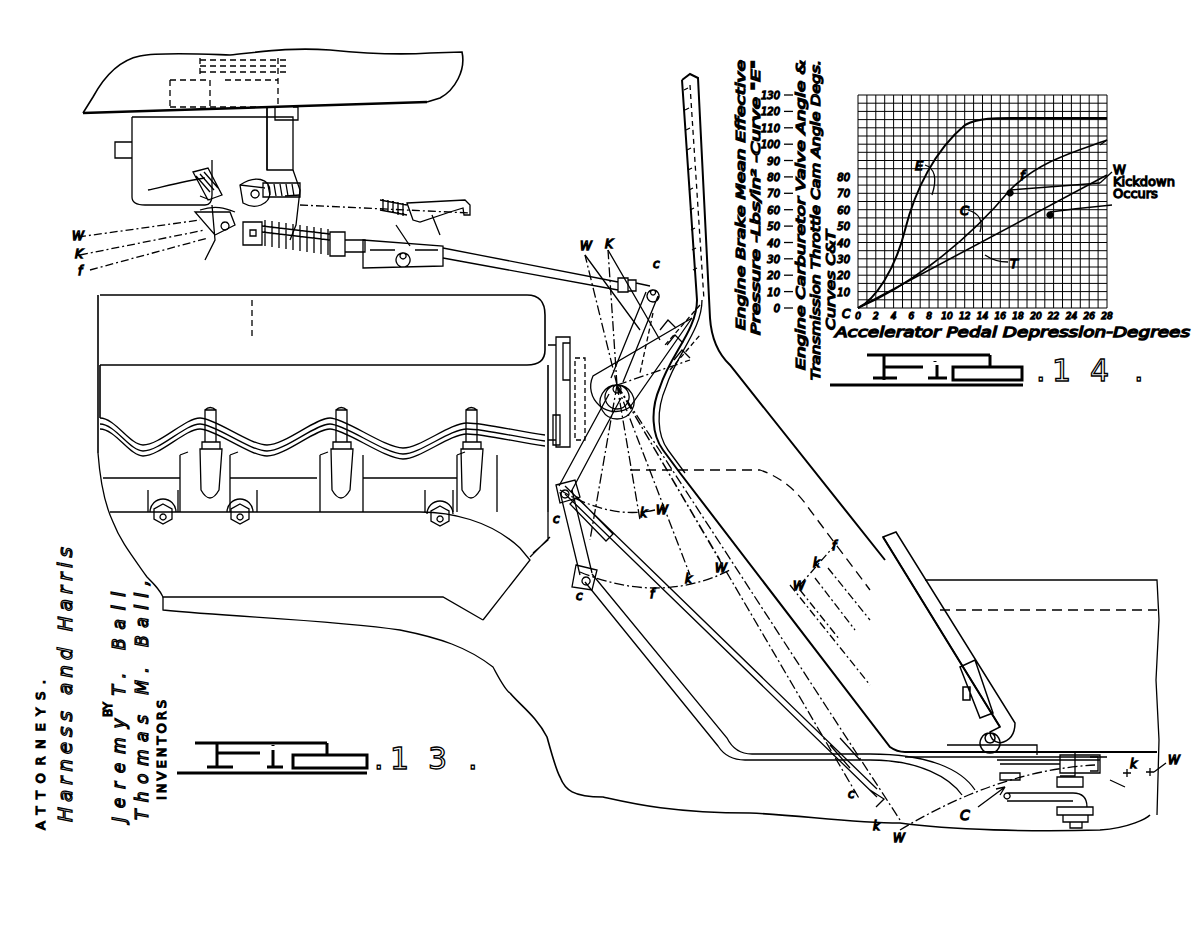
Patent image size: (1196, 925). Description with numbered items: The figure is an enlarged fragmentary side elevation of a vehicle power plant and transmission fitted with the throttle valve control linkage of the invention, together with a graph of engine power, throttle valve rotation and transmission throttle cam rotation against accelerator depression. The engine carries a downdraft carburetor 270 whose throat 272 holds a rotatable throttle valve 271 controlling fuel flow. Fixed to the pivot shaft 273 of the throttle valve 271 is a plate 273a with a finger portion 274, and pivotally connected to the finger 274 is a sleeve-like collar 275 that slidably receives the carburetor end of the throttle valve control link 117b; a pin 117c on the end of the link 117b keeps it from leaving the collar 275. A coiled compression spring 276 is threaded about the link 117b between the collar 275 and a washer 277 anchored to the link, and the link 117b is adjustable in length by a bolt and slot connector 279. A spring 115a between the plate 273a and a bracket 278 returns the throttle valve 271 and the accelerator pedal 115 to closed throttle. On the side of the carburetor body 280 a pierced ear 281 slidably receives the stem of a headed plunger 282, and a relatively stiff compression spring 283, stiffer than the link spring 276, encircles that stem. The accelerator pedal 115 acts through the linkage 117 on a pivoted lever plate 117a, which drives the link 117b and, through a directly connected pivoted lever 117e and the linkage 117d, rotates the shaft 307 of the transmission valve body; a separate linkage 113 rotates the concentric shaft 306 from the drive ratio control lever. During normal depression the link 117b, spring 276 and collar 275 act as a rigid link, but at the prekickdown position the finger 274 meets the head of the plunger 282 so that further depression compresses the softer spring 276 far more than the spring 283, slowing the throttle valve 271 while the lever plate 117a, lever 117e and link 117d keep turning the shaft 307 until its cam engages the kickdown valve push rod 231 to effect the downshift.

In FIG. 13, the downdraft carburetor 270 is at (474, 73).
In FIG. 13, the carburetor body 280 is at (152, 128).
In FIG. 13, the throat 272 is at (300, 126).
In FIG. 13, the throttle valve 271 is at (297, 160).
In FIG. 13, the pivot shaft 273 is at (256, 183).
In FIG. 13, the plate 273a is at (302, 186).
In FIG. 13, the compression spring 283 is at (208, 168).
In FIG. 13, the pierced ear 281 is at (150, 180).
In FIG. 13, the headed plunger 282 is at (200, 207).
In FIG. 14, the headed plunger 282 is at (1107, 140).
In FIG. 13, the finger portion 274 is at (205, 235).
In FIG. 13, the washer 277 is at (300, 215).
In FIG. 13, the pin 117c is at (243, 258).
In FIG. 13, the collar 275 is at (258, 246).
In FIG. 13, the coiled compression spring 276 is at (318, 258).
In FIG. 13, the bolt and slot connector 279 is at (410, 262).
In FIG. 13, the spring 115a is at (392, 203).
In FIG. 13, the bracket 278 is at (470, 212).
In FIG. 13, the throttle valve control link 117b is at (545, 255).
In FIG. 13, the lever plate 117a is at (600, 398).
In FIG. 13, the linkage 117 is at (745, 612).
In FIG. 13, the pivoted lever 117e is at (567, 553).
In FIG. 13, the linkage 117d is at (680, 700).
In FIG. 13, the accelerator pedal 115 is at (900, 547).
In FIG. 13, the shaft 307 is at (1080, 755).
In FIG. 13, the shaft 306 is at (1085, 778).
In FIG. 13, the linkage 113 is at (1045, 805).
In FIG. 14, the kickdown valve push rod 231 is at (1050, 212).